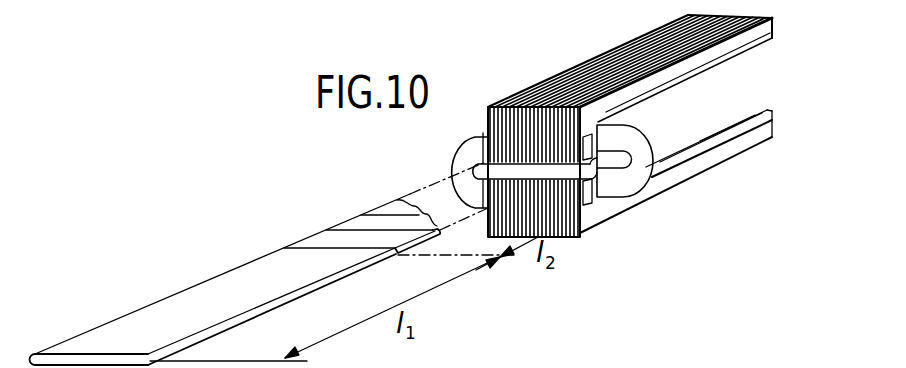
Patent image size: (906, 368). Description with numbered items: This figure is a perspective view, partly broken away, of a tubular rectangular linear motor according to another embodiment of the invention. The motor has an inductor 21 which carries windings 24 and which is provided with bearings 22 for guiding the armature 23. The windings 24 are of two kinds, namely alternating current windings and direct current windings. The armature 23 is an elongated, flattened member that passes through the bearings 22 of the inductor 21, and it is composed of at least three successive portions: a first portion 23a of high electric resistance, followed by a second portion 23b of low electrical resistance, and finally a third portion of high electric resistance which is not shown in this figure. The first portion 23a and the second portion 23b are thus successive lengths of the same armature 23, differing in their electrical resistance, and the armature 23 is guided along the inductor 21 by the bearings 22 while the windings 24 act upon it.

The inductor 21 is at (557, 83).
The bearings 22 is at (452, 160).
The armature 23 is at (235, 279).
The first portion 23a is at (164, 313).
The second portion 23b is at (363, 225).
The windings 24 is at (668, 162).